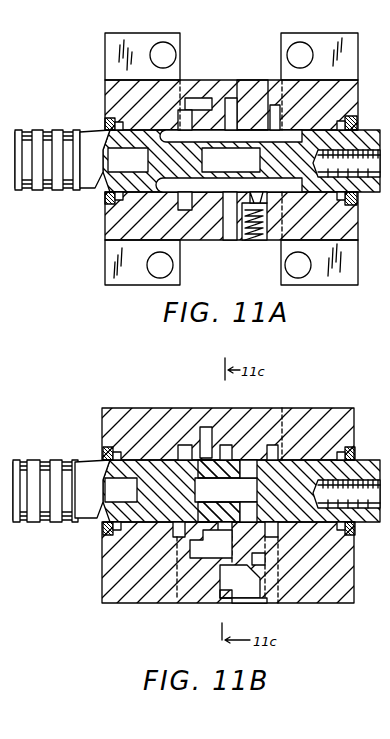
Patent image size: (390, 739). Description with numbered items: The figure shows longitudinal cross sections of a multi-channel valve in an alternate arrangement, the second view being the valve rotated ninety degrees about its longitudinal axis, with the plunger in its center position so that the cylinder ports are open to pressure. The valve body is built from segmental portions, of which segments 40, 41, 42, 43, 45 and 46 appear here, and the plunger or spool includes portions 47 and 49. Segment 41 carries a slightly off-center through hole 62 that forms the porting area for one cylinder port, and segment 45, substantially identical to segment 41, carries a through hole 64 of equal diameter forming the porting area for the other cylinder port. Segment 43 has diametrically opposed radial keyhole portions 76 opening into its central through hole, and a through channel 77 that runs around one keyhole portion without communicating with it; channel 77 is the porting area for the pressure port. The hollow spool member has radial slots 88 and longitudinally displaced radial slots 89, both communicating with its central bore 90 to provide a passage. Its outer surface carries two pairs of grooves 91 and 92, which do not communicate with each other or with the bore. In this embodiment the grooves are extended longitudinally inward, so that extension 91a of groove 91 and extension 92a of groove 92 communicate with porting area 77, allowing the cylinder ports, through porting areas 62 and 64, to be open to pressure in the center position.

In FIG. 11A, the body segment 40 is at (356, 107).
In FIG. 11A, the body segment 41 is at (273, 242).
In FIG. 11A, the body segment 42 is at (232, 80).
In FIG. 11A, the body segment 43 is at (225, 242).
In FIG. 11A, the body segment 45 is at (188, 80).
In FIG. 11A, the body segment 46 is at (104, 96).
In FIG. 11A, the plunger portion 47 is at (368, 199).
In FIG. 11B, the plunger portion 47 is at (365, 527).
In FIG. 11A, the plunger portion 49 is at (93, 128).
In FIG. 11B, the plunger portion 49 is at (93, 462).
In FIG. 11A, the through hole 62 is at (272, 105).
In FIG. 11B, the through hole 62 is at (272, 445).
In FIG. 11A, the through hole 64 is at (222, 241).
In FIG. 11B, the through hole 64 is at (184, 445).
In FIG. 11B, the keyhole portion 76 is at (228, 447).
In FIG. 11A, the through channel 77 is at (228, 122).
In FIG. 11B, the radial slot 88 is at (200, 482).
In FIG. 11B, the radial slot 89 is at (248, 460).
In FIG. 11B, the central bore 90 is at (244, 500).
In FIG. 11A, the groove 91 is at (128, 160).
In FIG. 11A, the groove extension 91a is at (231, 160).
In FIG. 11A, the groove 92 is at (241, 125).
In FIG. 11A, the groove extension 92a is at (242, 128).